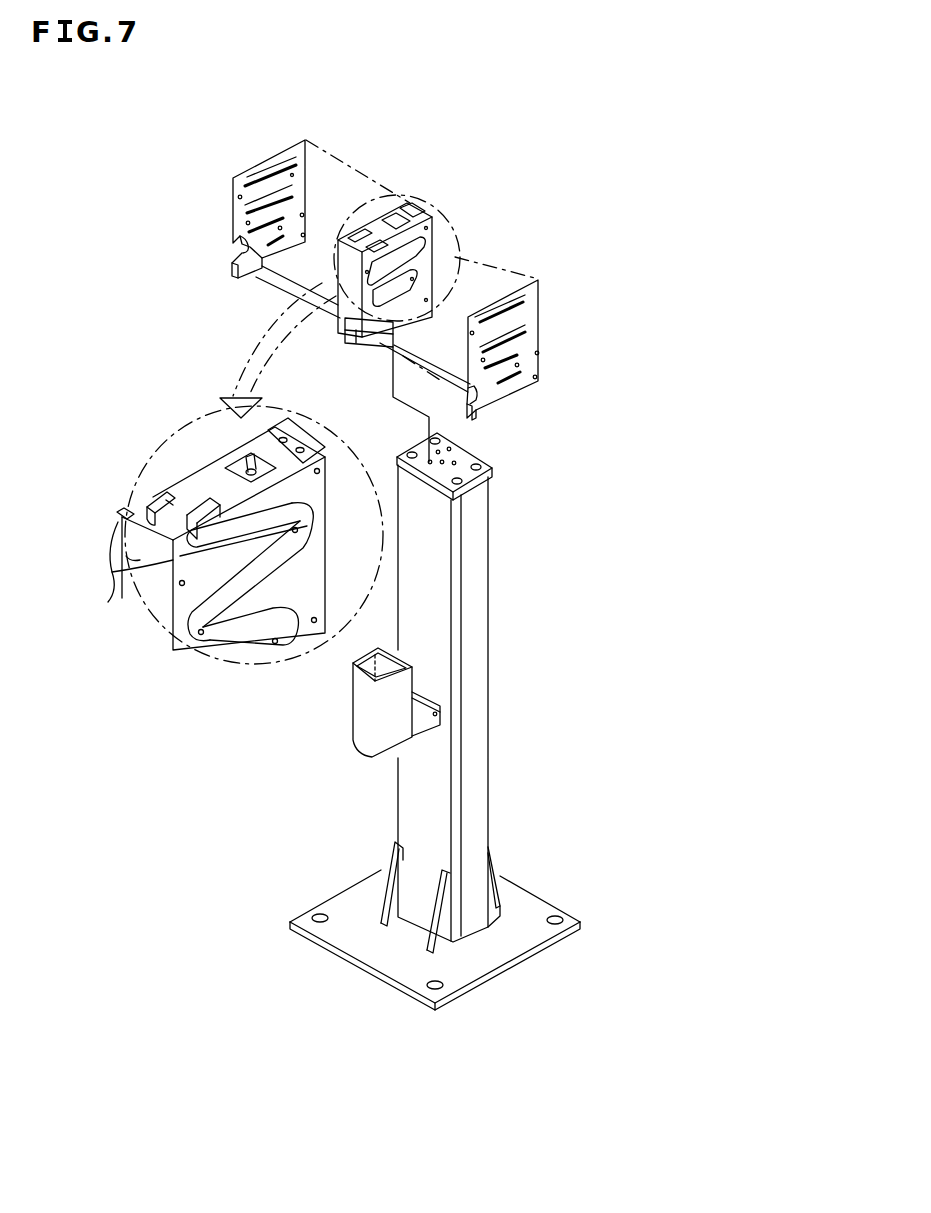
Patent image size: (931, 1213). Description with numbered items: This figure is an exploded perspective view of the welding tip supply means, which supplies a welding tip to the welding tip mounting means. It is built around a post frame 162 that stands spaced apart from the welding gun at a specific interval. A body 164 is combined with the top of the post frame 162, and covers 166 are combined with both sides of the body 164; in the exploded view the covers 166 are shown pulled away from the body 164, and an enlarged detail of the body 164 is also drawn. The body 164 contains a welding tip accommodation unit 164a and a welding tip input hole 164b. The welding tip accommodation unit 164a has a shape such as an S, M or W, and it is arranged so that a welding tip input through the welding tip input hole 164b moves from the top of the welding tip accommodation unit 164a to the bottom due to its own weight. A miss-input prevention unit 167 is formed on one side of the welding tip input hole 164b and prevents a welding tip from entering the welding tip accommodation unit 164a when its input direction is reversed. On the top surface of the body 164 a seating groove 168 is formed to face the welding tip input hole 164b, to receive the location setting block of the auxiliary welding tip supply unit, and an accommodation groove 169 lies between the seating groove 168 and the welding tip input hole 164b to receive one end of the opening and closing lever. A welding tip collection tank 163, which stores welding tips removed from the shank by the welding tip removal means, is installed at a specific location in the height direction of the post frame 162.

The post frame 162 is at (478, 642).
The welding tip collection tank 163 is at (366, 698).
The body 164 is at (503, 273).
The welding tip accommodation unit 164a is at (190, 660).
The welding tip input hole 164b is at (118, 558).
The covers 166 is at (529, 380).
The miss-input prevention unit 167 is at (158, 500).
The seating groove 168 is at (275, 426).
The accommodation groove 169 is at (201, 486).